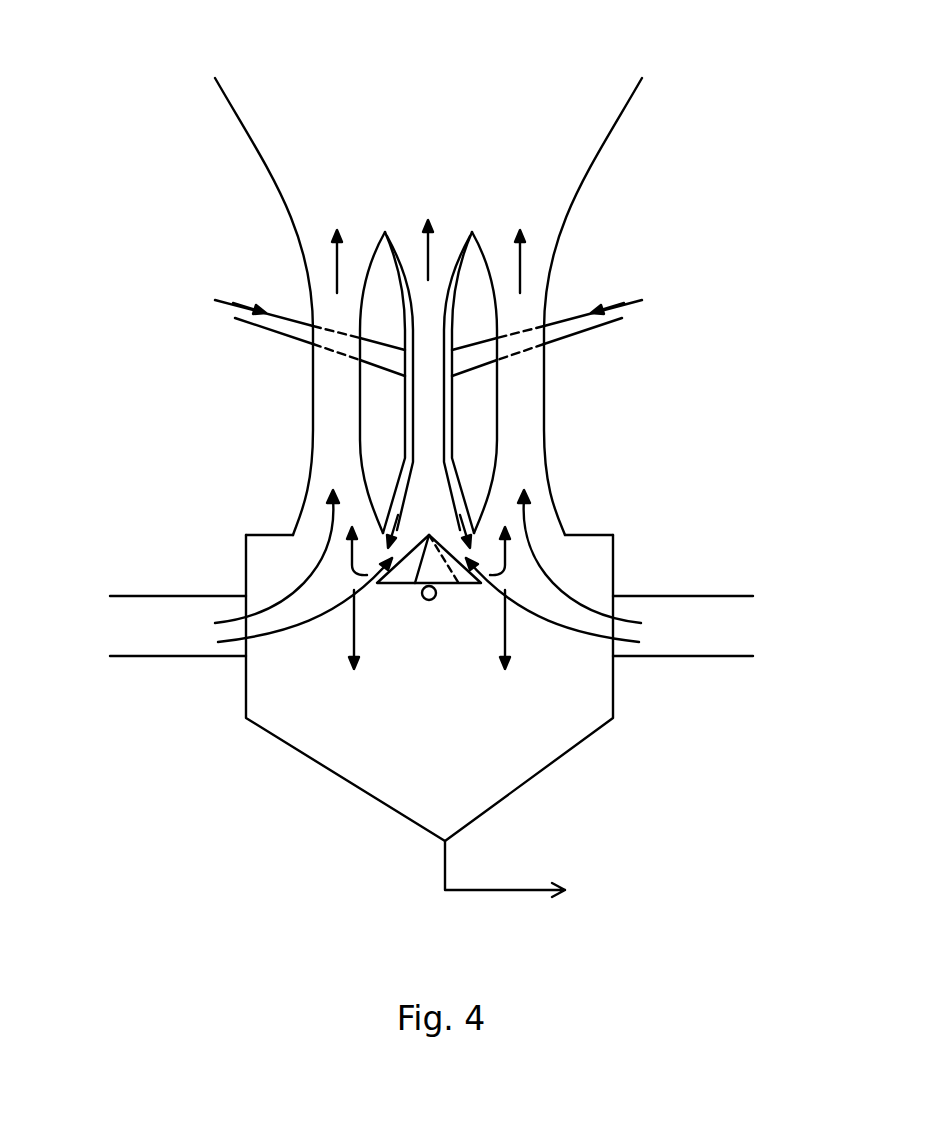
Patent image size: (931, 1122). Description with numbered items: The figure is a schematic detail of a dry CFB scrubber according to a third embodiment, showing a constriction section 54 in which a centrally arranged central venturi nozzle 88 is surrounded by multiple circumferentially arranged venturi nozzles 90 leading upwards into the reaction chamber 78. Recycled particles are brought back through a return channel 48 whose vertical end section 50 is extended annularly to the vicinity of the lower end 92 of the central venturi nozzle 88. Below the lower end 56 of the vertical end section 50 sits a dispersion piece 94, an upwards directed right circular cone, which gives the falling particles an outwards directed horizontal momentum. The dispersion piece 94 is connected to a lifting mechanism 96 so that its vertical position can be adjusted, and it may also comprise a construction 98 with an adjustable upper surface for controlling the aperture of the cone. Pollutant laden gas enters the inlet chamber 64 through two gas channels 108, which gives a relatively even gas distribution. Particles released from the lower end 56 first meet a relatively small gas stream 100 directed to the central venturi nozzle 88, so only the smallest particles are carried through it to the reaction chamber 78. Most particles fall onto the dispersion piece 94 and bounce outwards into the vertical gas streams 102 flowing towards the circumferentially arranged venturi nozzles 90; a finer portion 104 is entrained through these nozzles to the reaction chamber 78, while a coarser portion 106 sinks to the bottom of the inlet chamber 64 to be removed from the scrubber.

The return channel 48 is at (572, 305).
The vertical end section 50 is at (452, 418).
The constriction section 54 is at (183, 334).
The lower end 56 is at (477, 500).
The inlet chamber 64 is at (420, 708).
The reaction chamber 78 is at (448, 91).
The central venturi nozzle 88 is at (413, 406).
The circumferentially arranged venturi nozzles 90 is at (313, 430).
The lower end 92 is at (413, 527).
The dispersion piece 94 is at (395, 573).
The lifting mechanism 96 is at (420, 594).
The construction 98 is at (390, 548).
The gas stream 100 is at (497, 590).
The vertical gas streams 102 is at (566, 515).
The finer portion 104 is at (505, 562).
The coarser portion 106 is at (508, 638).
The gas channels 108 is at (205, 660).